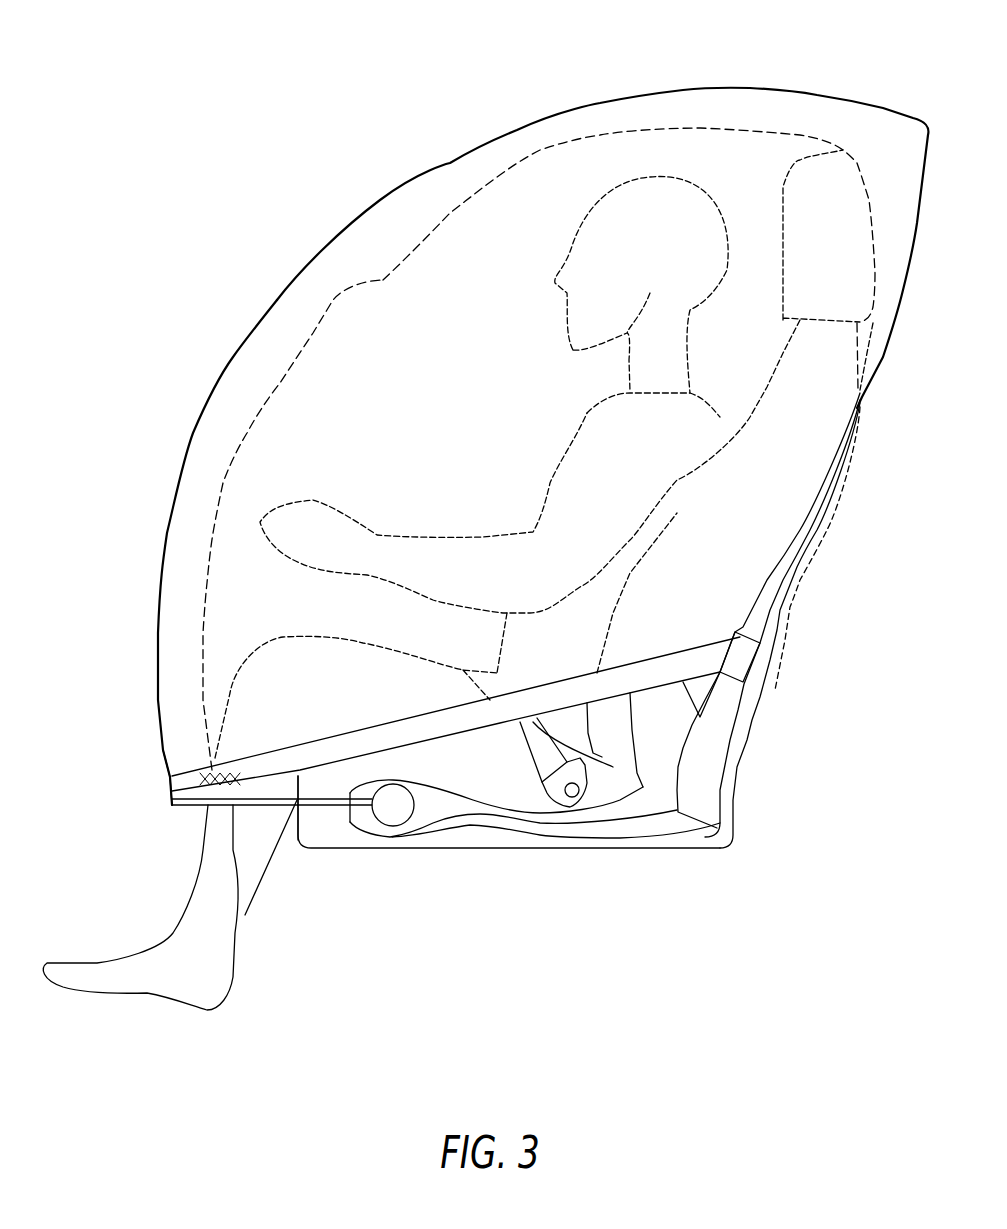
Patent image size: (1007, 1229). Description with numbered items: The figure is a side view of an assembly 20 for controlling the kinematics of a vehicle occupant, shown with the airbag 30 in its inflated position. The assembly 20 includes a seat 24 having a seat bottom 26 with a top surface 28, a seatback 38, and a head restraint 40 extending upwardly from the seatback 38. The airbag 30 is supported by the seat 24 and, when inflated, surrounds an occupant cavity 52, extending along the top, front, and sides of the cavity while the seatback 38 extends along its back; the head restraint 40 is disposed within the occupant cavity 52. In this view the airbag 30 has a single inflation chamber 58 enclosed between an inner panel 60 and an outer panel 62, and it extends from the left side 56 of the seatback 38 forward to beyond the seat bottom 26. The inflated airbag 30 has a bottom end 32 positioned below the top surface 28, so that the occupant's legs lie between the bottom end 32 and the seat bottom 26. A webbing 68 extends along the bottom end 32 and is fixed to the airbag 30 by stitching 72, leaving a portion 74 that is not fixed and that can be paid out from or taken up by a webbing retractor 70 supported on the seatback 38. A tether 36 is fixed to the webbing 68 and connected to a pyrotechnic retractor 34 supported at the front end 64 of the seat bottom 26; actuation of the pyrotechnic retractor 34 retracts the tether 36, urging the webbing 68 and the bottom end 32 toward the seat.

The assembly 20 is at (228, 234).
The seat 24 is at (855, 506).
The seat bottom 26 is at (600, 850).
The top surface 28 is at (512, 733).
The airbag 30 is at (403, 187).
The bottom end 32 is at (168, 812).
The pyrotechnic retractor 34 is at (393, 820).
The tether 36 is at (243, 907).
The seatback 38 is at (787, 567).
The head restraint 40 is at (830, 180).
The occupant cavity 52 is at (757, 176).
The left side 56 is at (757, 613).
The inflation chamber 58 is at (250, 370).
The inner panel 60 is at (603, 153).
The outer panel 62 is at (183, 453).
The front end 64 is at (297, 817).
The webbing 68 is at (650, 690).
The webbing retractor 70 is at (752, 672).
The stitching 72 is at (210, 777).
The portion 74 is at (483, 710).